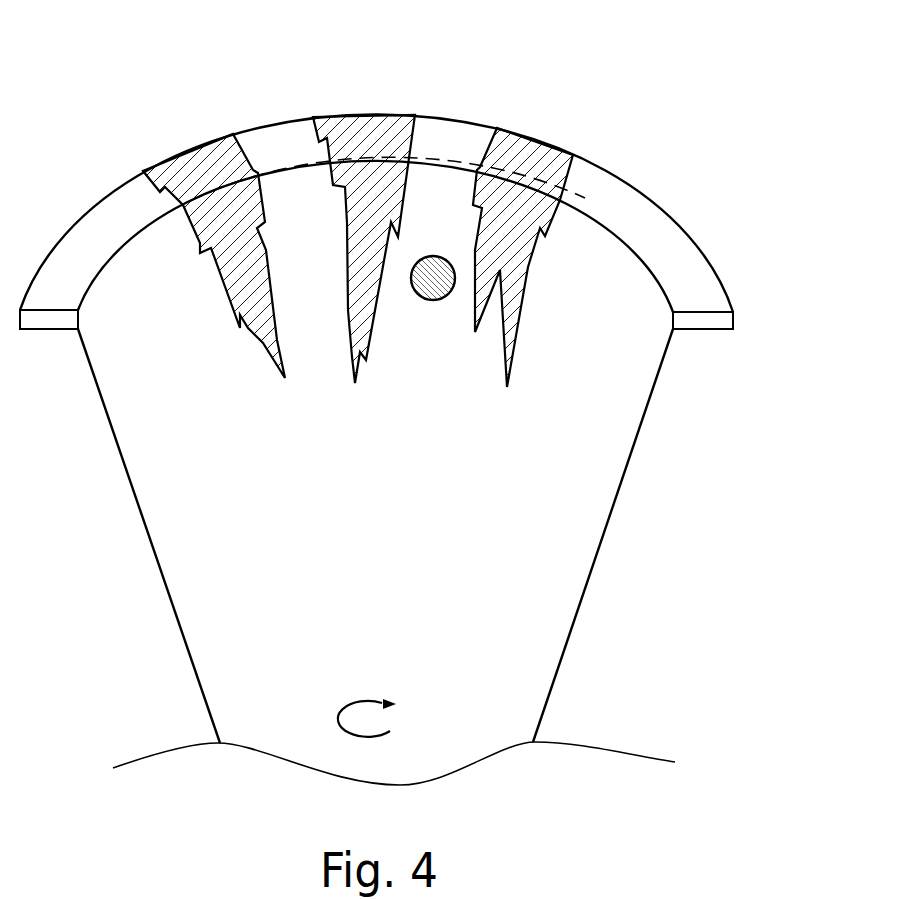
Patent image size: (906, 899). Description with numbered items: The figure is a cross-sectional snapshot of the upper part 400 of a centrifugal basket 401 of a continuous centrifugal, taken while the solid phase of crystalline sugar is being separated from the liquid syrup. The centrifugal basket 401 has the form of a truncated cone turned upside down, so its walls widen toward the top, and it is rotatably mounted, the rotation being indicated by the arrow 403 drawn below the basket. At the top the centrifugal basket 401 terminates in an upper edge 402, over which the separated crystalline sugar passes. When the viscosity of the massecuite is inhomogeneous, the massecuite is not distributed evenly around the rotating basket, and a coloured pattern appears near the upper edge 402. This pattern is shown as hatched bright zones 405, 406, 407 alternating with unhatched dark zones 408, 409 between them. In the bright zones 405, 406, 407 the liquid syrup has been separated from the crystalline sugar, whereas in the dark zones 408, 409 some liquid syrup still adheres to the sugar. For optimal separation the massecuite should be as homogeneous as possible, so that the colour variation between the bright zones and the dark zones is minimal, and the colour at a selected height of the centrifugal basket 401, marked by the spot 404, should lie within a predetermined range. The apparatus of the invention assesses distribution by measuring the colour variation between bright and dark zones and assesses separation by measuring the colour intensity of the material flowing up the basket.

The upper part 400 is at (411, 402).
The centrifugal basket 401 is at (618, 492).
The upper edge 402 is at (692, 290).
The arrow 403 is at (368, 700).
The spot 404 is at (435, 283).
The bright zone 405 is at (240, 282).
The bright zone 406 is at (353, 317).
The bright zone 407 is at (510, 318).
The dark zone 408 is at (297, 197).
The dark zone 409 is at (440, 195).